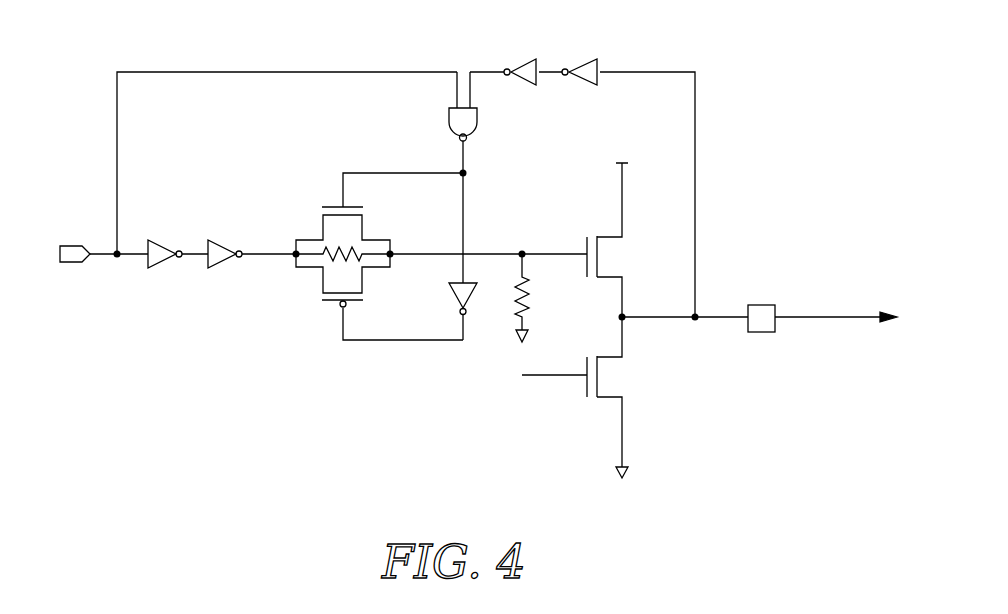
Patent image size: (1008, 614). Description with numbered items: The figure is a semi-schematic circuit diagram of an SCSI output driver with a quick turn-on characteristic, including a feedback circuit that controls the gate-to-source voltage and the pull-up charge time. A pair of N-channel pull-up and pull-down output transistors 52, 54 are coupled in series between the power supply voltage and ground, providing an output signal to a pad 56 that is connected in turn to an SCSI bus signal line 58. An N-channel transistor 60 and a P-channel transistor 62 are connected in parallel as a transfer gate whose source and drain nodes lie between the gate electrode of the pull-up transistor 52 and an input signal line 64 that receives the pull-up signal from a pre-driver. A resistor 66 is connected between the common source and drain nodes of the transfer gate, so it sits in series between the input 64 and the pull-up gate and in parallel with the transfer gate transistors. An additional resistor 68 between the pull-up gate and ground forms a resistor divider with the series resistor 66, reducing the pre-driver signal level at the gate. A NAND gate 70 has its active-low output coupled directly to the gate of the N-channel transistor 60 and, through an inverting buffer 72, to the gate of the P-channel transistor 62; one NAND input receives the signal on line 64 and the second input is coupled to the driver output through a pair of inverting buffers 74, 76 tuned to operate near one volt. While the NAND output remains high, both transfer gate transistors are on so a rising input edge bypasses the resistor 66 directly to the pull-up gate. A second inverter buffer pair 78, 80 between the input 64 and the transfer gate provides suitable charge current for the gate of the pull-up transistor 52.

The pull-up N-channel transistor 52 is at (610, 256).
The pull-down N-channel transistor 54 is at (617, 380).
The pad 56 is at (762, 315).
The SCSI bus signal line 58 is at (858, 317).
The N-channel transistor 60 is at (329, 222).
The P-channel transistor 62 is at (337, 283).
The input signal line 64 is at (70, 243).
The resistor 66 is at (345, 242).
The additional resistor 68 is at (530, 290).
The NAND gate 70 is at (462, 116).
The inverting buffer 72 is at (455, 292).
The inverting buffer 74 is at (530, 65).
The inverting buffer 76 is at (595, 62).
The inverter buffer 78 is at (160, 258).
The inverter buffer 80 is at (223, 258).